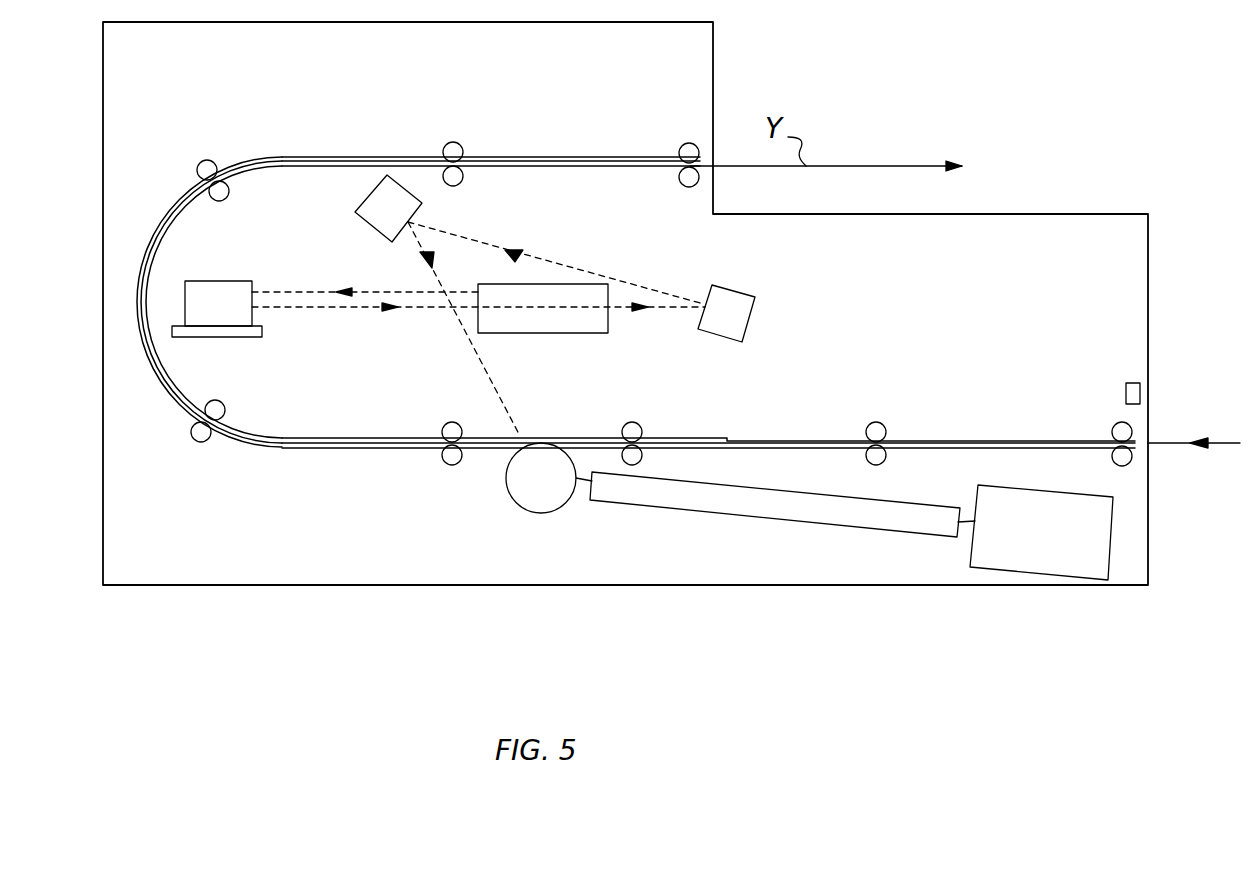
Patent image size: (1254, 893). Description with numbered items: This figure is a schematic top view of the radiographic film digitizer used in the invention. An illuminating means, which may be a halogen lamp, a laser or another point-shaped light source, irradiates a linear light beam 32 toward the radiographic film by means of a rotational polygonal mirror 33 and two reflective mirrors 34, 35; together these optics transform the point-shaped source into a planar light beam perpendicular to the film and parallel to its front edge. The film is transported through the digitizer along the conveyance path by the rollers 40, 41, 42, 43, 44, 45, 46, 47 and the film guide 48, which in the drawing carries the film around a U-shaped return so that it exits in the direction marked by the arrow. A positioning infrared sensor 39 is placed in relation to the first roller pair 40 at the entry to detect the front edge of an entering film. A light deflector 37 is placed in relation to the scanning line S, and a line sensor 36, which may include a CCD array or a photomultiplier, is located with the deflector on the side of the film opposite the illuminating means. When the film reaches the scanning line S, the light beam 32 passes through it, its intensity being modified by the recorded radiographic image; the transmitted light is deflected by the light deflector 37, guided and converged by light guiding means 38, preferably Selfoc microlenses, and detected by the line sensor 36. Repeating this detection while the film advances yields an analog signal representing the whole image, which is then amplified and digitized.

The linear light beam 32 is at (572, 265).
The rotational polygonal mirror 33 is at (243, 291).
The reflective mirror 34 is at (737, 307).
The reflective mirror 35 is at (363, 210).
The line sensor 36 is at (1047, 500).
The light deflector 37 is at (523, 485).
The light guiding means 38 is at (697, 500).
The positioning infrared sensor 39 is at (1141, 390).
The first roller pair 40 is at (1112, 448).
The roller 41 is at (890, 453).
The roller 42 is at (640, 452).
The roller 43 is at (442, 455).
The roller 44 is at (211, 432).
The roller 45 is at (221, 191).
The roller 46 is at (442, 166).
The roller 47 is at (682, 178).
The film guide 48 is at (304, 450).
The scanning line S is at (520, 437).